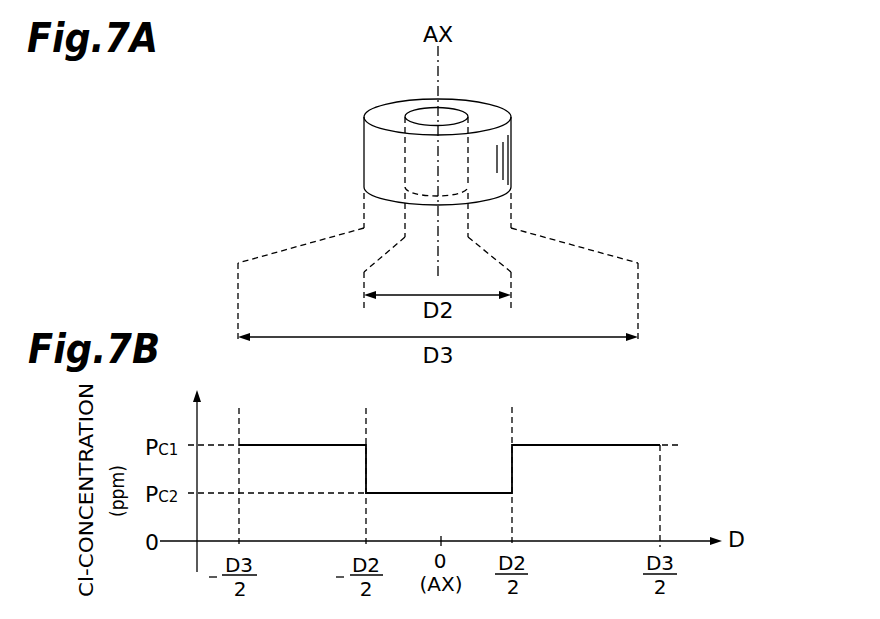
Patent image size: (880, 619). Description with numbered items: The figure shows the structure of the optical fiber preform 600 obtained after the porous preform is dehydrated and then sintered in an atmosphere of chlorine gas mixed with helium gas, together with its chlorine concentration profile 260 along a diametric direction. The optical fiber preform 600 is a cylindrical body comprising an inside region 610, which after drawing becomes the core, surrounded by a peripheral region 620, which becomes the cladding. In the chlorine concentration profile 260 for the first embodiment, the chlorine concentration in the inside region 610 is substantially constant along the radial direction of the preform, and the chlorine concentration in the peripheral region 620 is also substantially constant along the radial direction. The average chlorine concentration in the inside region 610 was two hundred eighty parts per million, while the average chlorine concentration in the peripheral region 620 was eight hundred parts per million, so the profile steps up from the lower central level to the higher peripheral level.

In FIG. 7A, the optical fiber preform 600 is at (488, 120).
In FIG. 7A, the inside region 610 is at (455, 117).
In FIG. 7A, the peripheral region 620 is at (493, 113).
In FIG. 7B, the chlorine concentration profile 260 is at (605, 445).